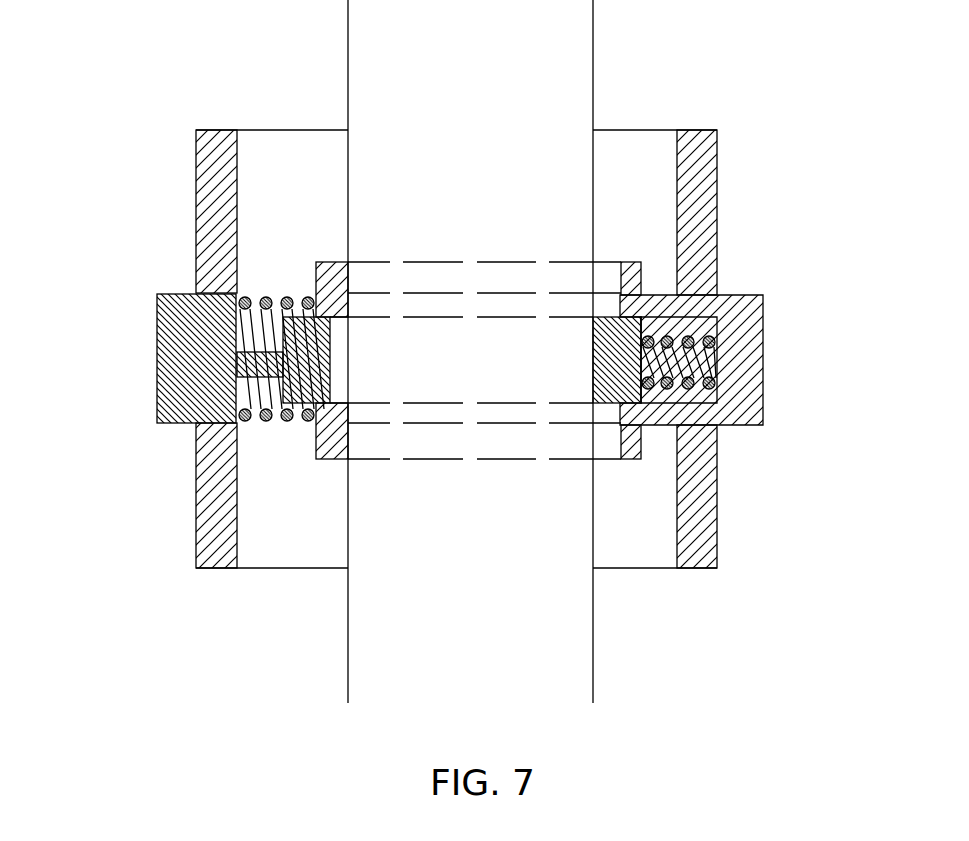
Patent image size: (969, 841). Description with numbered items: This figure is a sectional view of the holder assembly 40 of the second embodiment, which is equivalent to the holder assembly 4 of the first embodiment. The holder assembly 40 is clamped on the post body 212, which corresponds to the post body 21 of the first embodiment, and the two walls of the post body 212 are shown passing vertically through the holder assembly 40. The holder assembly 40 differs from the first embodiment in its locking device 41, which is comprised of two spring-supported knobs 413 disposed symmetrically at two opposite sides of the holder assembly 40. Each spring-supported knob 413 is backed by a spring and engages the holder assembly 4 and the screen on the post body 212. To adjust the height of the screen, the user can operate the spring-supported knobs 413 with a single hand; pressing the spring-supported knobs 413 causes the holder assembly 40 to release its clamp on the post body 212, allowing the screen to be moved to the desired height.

The holder assembly 4 is at (496, 349).
The holder assembly 40 is at (710, 170).
The locking device 41 is at (461, 359).
The spring-supported knob 413 is at (185, 352).
The post body 21 is at (538, 351).
The post body 212 is at (575, 652).